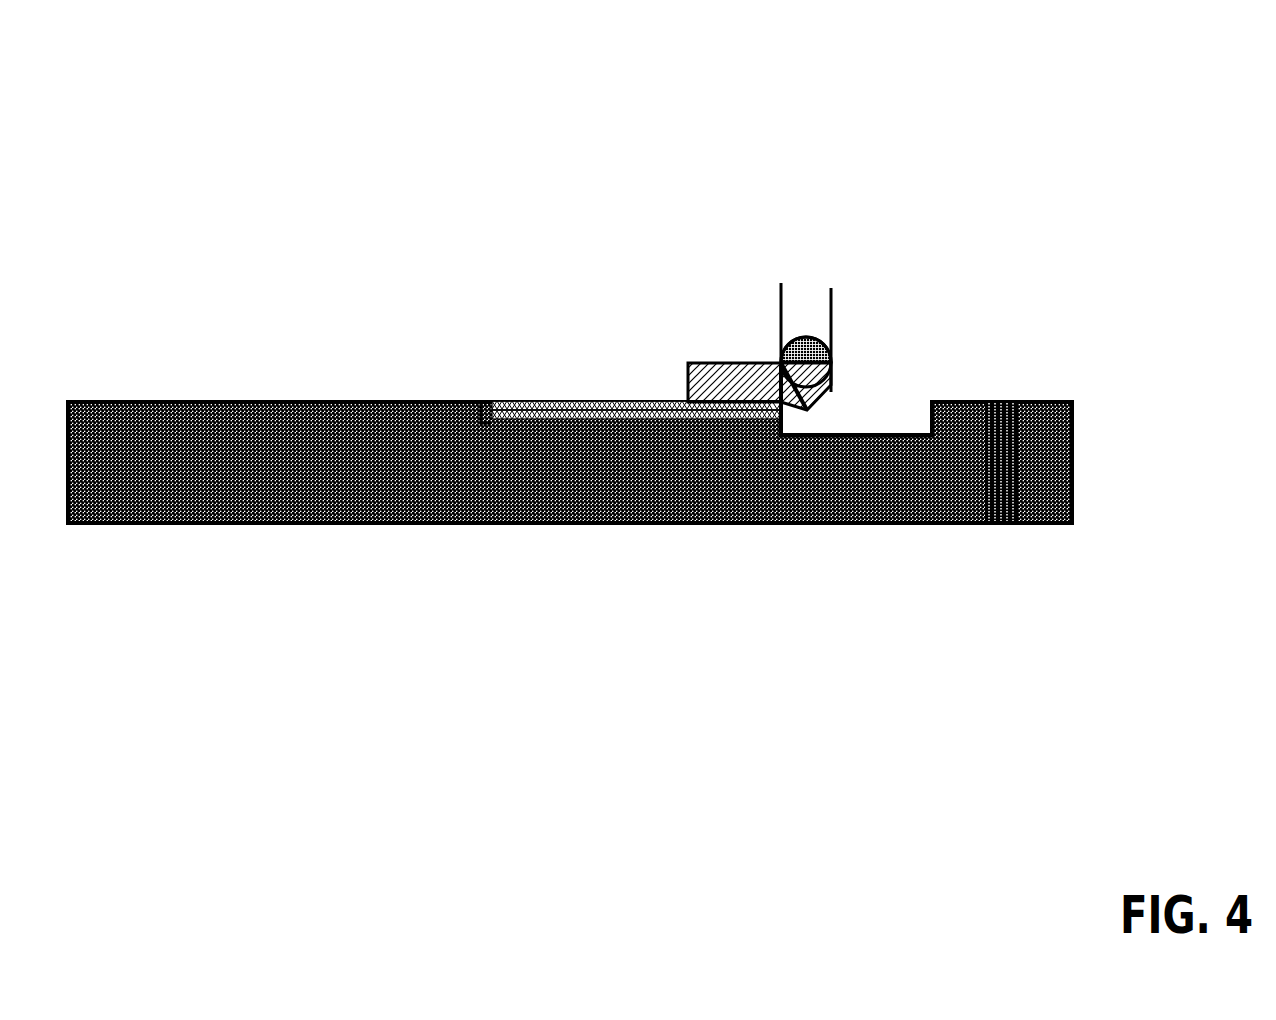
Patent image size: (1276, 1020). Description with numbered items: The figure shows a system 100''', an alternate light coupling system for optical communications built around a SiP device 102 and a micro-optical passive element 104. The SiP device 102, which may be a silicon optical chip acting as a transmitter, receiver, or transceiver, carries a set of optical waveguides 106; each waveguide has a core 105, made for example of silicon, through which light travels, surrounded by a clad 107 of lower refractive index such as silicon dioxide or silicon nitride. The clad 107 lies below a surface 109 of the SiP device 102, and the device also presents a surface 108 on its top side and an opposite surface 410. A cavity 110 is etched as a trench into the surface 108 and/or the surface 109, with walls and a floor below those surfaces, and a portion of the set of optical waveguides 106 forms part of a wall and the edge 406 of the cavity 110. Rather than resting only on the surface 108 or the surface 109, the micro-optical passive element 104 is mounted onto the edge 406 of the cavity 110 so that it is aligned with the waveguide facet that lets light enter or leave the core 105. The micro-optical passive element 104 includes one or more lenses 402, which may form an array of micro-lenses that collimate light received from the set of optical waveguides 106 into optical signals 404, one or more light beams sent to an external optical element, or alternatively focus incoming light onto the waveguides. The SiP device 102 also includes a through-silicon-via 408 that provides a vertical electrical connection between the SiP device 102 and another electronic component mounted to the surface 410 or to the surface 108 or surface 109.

The system 100''' is at (651, 310).
The SiP device 102 is at (592, 499).
The micro-optical passive element 104 is at (577, 319).
The core 105 is at (502, 402).
The set of optical waveguides 106 is at (462, 416).
The clad 107 is at (524, 410).
The surface 108 is at (239, 391).
The surface 109 is at (608, 388).
The cavity 110 is at (915, 444).
The lenses 402 is at (802, 322).
The optical signals 404 is at (904, 304).
The edge 406 is at (800, 414).
The through-silicon-via 408 is at (1024, 386).
The surface 410 is at (805, 530).